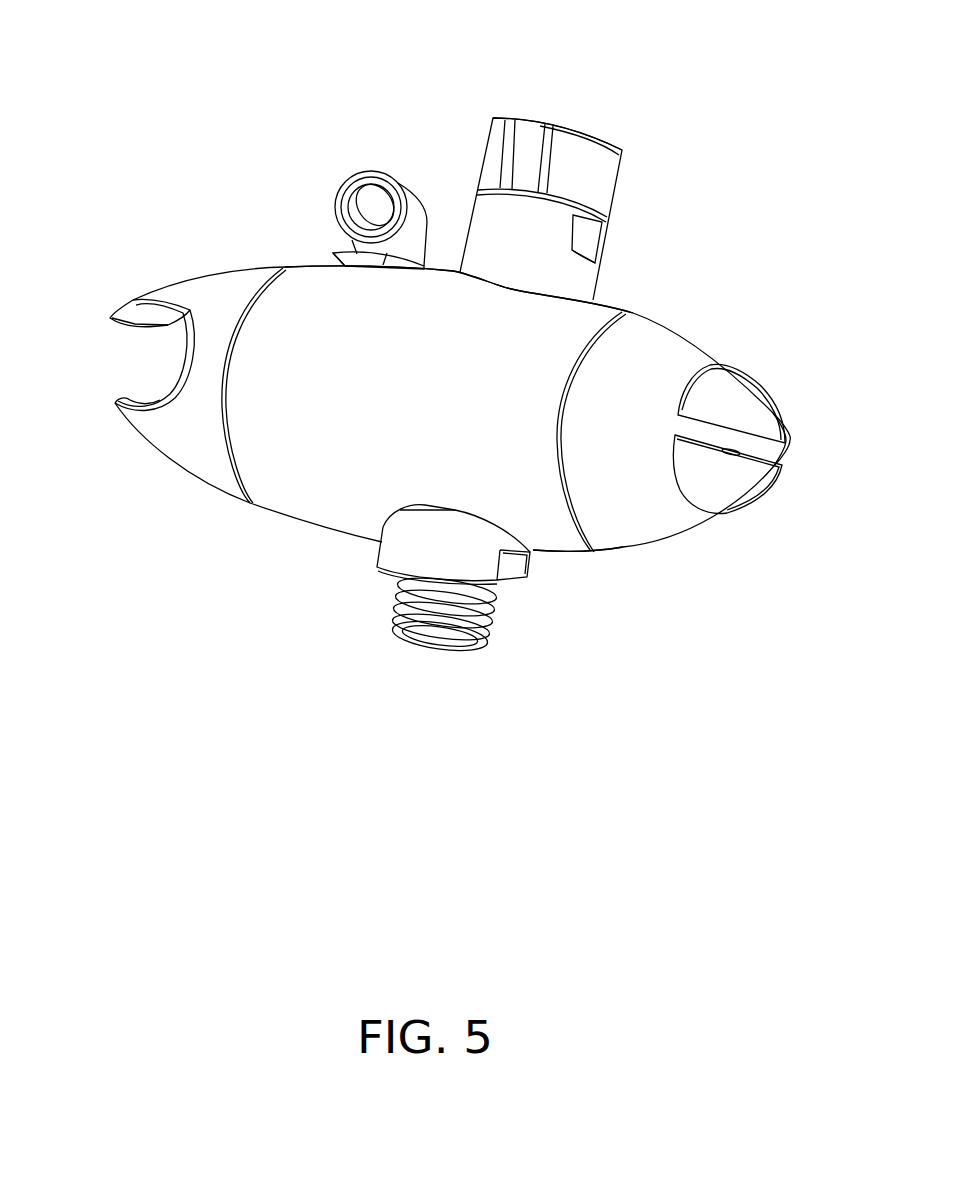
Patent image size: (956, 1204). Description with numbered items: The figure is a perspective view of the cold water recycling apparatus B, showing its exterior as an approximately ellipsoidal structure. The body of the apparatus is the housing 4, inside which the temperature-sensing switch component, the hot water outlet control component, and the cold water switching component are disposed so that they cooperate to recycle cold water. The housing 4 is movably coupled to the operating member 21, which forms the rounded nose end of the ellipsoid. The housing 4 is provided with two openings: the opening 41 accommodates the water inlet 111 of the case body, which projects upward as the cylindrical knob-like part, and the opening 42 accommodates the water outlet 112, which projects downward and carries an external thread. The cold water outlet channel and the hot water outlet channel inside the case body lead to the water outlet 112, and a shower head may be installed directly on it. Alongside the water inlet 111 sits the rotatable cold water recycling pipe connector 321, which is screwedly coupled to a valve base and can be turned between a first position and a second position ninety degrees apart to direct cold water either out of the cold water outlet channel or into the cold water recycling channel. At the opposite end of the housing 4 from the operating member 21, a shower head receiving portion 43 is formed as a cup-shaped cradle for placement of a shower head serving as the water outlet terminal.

The housing 4 is at (277, 397).
The shower head receiving portion 43 is at (170, 325).
The cold water recycling pipe connector 321 is at (370, 185).
The opening 41 is at (510, 285).
The water inlet 111 is at (553, 227).
The operating member 21 is at (668, 370).
The opening 42 is at (455, 510).
The water outlet 112 is at (492, 637).
The cold water recycling apparatus B is at (667, 582).